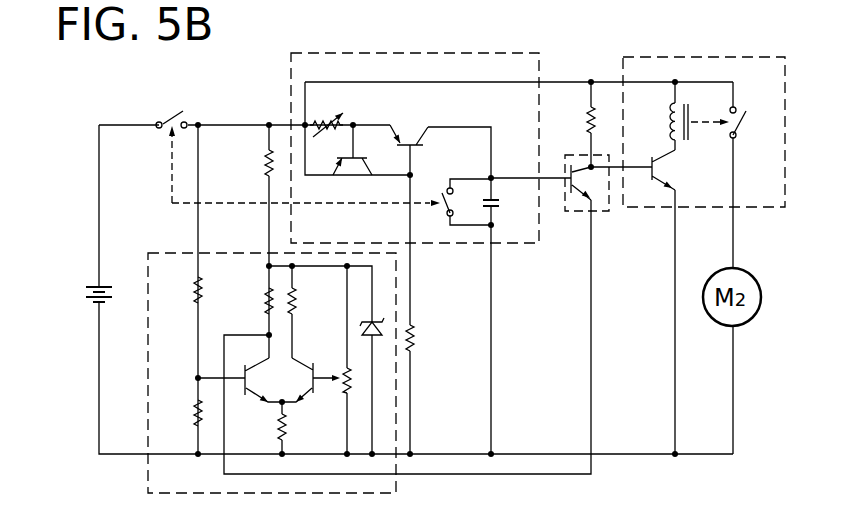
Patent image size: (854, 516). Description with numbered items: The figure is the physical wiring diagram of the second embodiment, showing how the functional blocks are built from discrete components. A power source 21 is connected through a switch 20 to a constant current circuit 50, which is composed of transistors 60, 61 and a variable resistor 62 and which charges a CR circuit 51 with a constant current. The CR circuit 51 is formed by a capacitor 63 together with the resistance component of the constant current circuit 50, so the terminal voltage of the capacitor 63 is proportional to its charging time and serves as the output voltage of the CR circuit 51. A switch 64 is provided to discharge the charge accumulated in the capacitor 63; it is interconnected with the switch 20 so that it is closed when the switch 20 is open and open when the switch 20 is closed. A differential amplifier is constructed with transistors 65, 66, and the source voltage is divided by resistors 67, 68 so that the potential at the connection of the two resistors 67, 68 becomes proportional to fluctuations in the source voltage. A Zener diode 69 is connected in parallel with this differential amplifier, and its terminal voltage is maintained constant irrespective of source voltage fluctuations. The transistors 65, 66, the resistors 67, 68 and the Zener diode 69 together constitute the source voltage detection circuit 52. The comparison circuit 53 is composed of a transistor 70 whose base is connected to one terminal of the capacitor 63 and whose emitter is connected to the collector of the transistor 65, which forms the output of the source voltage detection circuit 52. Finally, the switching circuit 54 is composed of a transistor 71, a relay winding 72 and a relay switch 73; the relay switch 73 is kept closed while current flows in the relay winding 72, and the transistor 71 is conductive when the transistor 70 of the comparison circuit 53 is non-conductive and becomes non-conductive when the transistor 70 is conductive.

The switch 20 is at (173, 115).
The power source 21 is at (109, 302).
The constant current circuit 50 is at (415, 124).
The CR circuit 51 is at (481, 53).
The source voltage detection circuit 52 is at (397, 490).
The comparison circuit 53 is at (600, 212).
The switching circuit 54 is at (741, 57).
The transistor 60 is at (363, 158).
The transistor 61 is at (404, 140).
The variable resistor 62 is at (334, 113).
The capacitor 63 is at (503, 202).
The switch 64 is at (446, 196).
The transistor 65 is at (248, 392).
The transistor 66 is at (317, 395).
The resistor 67 is at (195, 412).
The resistor 68 is at (205, 292).
The Zener diode 69 is at (376, 322).
The transistor 70 is at (580, 165).
The transistor 71 is at (651, 165).
The relay winding 72 is at (690, 133).
The relay switch 73 is at (738, 130).